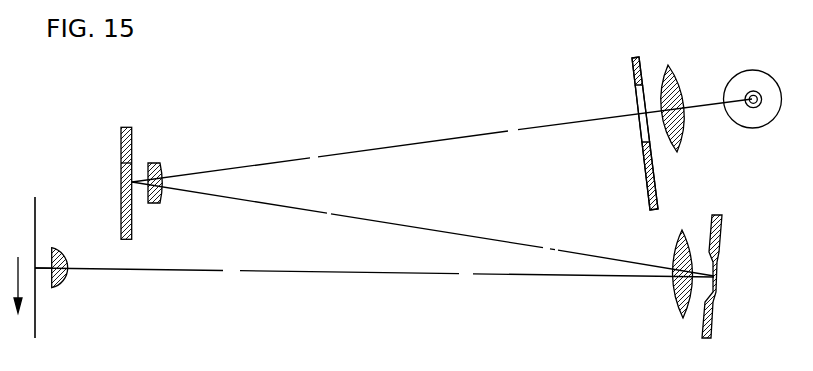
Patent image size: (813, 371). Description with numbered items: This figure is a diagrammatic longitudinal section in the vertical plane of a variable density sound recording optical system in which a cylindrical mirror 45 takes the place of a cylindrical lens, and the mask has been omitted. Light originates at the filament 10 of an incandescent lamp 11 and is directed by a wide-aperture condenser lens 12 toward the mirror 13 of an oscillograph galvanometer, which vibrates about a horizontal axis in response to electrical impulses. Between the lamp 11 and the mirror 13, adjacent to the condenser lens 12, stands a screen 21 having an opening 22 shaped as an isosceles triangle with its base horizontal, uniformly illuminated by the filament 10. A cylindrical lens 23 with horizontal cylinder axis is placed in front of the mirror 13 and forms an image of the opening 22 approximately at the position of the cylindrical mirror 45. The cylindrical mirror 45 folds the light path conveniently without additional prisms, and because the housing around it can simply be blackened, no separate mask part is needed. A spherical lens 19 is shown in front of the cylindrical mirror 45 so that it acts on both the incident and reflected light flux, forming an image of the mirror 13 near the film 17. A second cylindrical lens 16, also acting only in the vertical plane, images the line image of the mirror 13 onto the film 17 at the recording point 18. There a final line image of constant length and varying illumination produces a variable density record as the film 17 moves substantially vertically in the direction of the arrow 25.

The filament 10 is at (759, 106).
The incandescent lamp 11 is at (752, 71).
The condenser lens 12 is at (668, 65).
The mirror 13 is at (121, 175).
The cylindrical lens 16 is at (67, 277).
The film 17 is at (38, 204).
The recording point 18 is at (37, 270).
The spherical lens 19 is at (678, 318).
The screen 21 is at (634, 82).
The opening 22 is at (640, 123).
The cylindrical lens 23 is at (155, 163).
The arrow 25 is at (18, 273).
The cylindrical mirror 45 is at (718, 265).